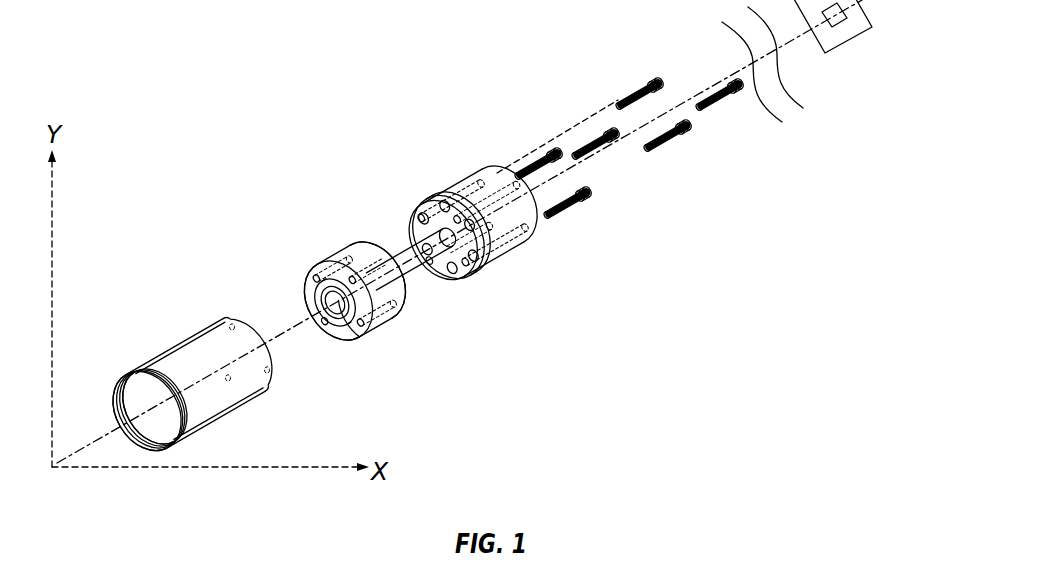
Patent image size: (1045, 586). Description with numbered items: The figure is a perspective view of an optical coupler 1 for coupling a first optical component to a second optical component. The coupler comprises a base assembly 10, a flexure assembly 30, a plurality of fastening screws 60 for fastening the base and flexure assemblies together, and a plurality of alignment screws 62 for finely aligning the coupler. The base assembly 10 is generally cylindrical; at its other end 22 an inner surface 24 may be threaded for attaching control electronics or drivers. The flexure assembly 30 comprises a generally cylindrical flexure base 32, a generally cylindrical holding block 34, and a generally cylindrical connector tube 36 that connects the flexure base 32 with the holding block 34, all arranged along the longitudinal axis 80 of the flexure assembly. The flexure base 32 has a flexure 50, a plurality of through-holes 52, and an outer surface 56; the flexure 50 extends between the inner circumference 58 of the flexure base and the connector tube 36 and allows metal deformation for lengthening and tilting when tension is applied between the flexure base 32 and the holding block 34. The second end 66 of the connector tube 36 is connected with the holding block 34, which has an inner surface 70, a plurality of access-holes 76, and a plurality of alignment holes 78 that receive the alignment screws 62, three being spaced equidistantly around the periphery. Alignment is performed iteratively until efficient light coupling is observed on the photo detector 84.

The optical coupler 1 is at (205, 102).
The base assembly 10 is at (232, 425).
The other end of the base assembly 22 is at (102, 422).
The inner surface 24 is at (116, 410).
The flexure assembly 30 is at (496, 236).
The flexure base 32 is at (327, 240).
The holding block 34 is at (438, 177).
The connector tube 36 is at (331, 226).
The flexure 50 is at (322, 281).
The through-holes 52 is at (402, 311).
The outer surface 56 is at (361, 333).
The inner circumference 58 is at (326, 291).
The fastening screws 60 is at (659, 148).
The alignment screws 62 is at (593, 219).
The second end of the connector tube 66 is at (442, 283).
The inner surface 70 is at (398, 233).
The access-holes 76 is at (472, 252).
The alignment holes 78 is at (455, 273).
The longitudinal axis 80 is at (283, 338).
The photo detector 84 is at (838, 44).